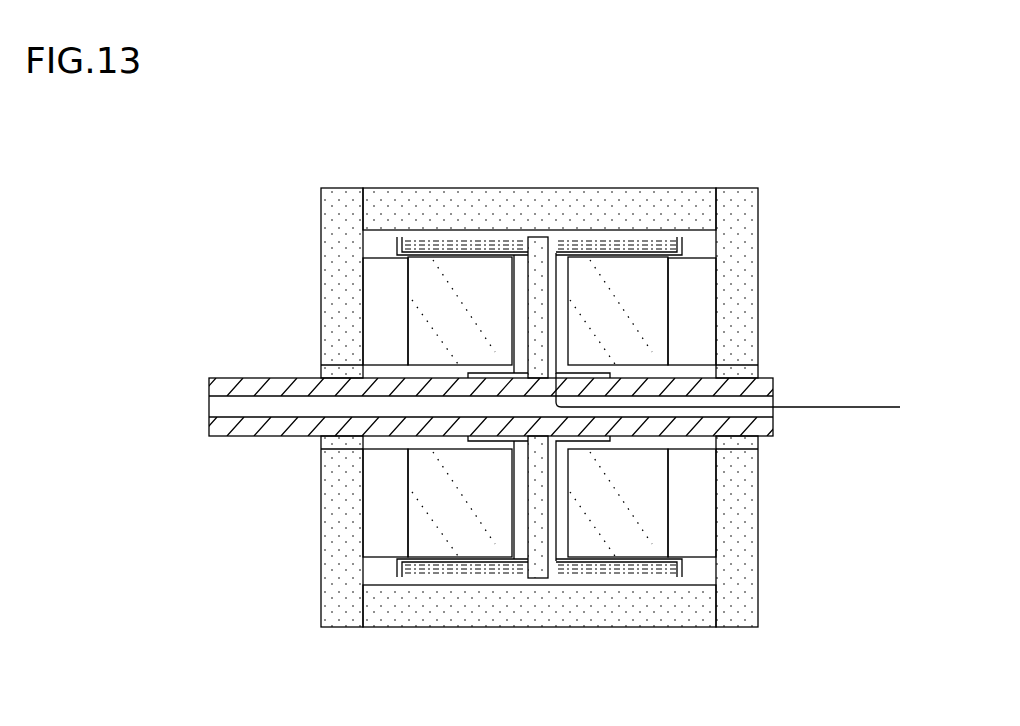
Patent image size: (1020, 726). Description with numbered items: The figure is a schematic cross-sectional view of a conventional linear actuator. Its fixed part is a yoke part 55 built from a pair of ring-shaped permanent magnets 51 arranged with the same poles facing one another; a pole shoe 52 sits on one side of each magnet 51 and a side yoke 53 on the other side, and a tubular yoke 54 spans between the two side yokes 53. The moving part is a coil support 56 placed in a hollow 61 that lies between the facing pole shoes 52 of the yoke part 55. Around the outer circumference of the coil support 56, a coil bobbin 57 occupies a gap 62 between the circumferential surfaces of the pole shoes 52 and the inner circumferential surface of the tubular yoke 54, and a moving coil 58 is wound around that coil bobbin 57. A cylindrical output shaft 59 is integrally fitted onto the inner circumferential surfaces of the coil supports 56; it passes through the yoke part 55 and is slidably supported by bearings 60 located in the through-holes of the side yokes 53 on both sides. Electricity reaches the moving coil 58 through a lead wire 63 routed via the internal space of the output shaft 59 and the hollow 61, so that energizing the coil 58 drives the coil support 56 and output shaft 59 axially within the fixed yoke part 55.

The permanent magnet 51 is at (373, 282).
The pole shoe 52 is at (420, 347).
The side yoke 53 is at (335, 208).
The tubular yoke 54 is at (595, 202).
The yoke part 55 is at (366, 184).
The coil support 56 is at (538, 240).
The coil bobbin 57 is at (402, 236).
The moving coil 58 is at (638, 242).
The output shaft 59 is at (235, 382).
The bearing 60 is at (748, 370).
The hollow 61 is at (559, 547).
The gap 62 is at (698, 243).
The lead wire 63 is at (808, 408).